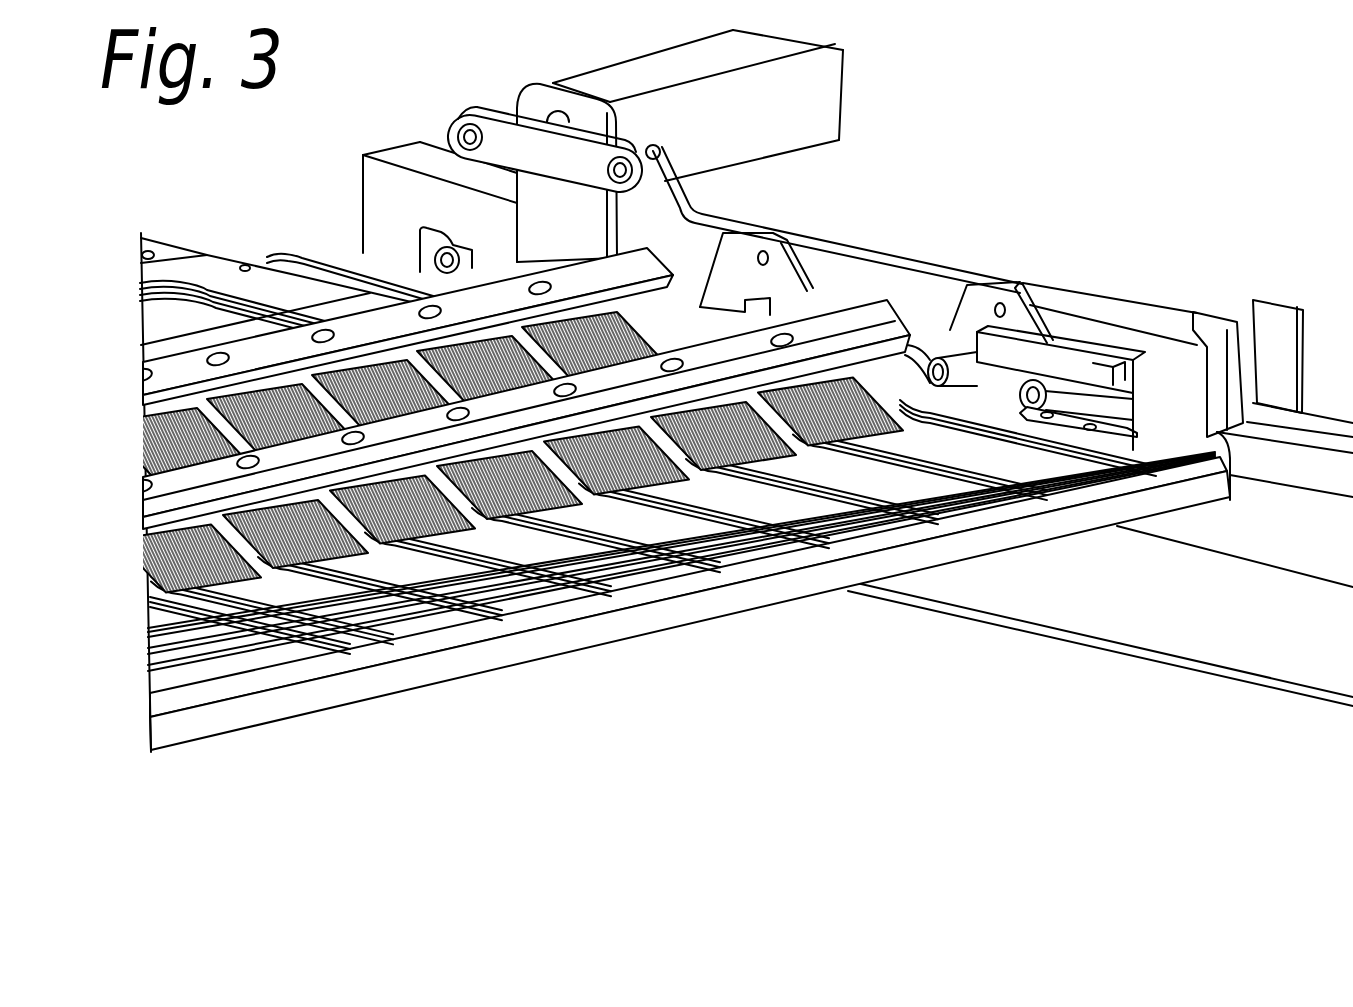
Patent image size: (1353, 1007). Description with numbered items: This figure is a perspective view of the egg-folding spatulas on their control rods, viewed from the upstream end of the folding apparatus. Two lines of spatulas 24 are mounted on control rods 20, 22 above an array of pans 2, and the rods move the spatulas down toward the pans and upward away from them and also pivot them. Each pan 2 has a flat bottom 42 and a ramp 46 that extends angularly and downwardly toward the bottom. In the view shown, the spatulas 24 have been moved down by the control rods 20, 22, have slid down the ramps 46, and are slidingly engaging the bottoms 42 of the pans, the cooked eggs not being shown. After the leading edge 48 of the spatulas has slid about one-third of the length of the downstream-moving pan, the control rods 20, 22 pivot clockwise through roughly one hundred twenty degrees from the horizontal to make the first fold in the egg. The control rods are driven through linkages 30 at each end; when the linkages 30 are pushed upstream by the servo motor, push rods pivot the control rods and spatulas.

The pan 2 is at (677, 487).
The control rod 20 is at (877, 321).
The control rod 22 is at (643, 270).
The spatula 24 is at (910, 440).
The linkage 30 is at (597, 211).
The flat bottom 42 is at (673, 541).
The ramp 46 is at (240, 290).
The leading edge 48 is at (730, 473).